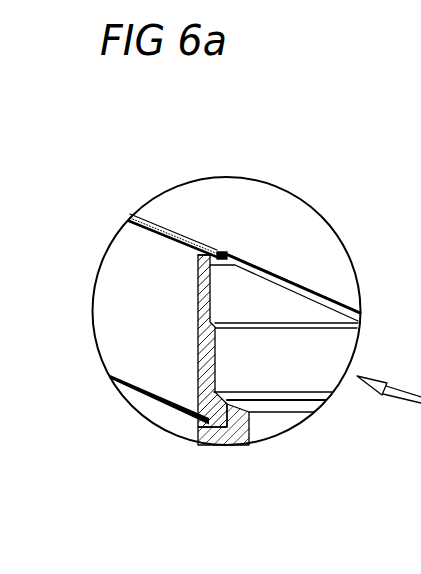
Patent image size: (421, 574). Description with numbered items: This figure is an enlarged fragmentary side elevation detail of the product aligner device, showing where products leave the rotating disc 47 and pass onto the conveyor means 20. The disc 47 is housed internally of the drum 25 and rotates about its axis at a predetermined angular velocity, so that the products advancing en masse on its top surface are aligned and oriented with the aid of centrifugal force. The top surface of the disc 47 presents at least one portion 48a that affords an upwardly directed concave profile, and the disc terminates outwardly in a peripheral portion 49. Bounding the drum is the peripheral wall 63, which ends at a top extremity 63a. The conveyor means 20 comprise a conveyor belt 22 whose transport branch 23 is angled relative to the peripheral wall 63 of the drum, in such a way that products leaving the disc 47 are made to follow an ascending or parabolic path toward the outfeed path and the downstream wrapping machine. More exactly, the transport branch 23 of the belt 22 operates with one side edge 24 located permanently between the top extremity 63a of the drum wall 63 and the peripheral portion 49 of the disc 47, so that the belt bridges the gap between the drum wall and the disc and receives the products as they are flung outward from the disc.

The conveyor means 20 is at (151, 214).
The conveyor belt 22 is at (167, 221).
The transport branch 23 is at (189, 238).
The side edge 24 is at (222, 250).
The drum 25 is at (196, 440).
The disc 47 is at (297, 303).
The concave portion of top surface 48a is at (327, 300).
The peripheral portion 49 is at (241, 256).
The peripheral wall 63 is at (198, 362).
The top extremity 63a is at (198, 253).